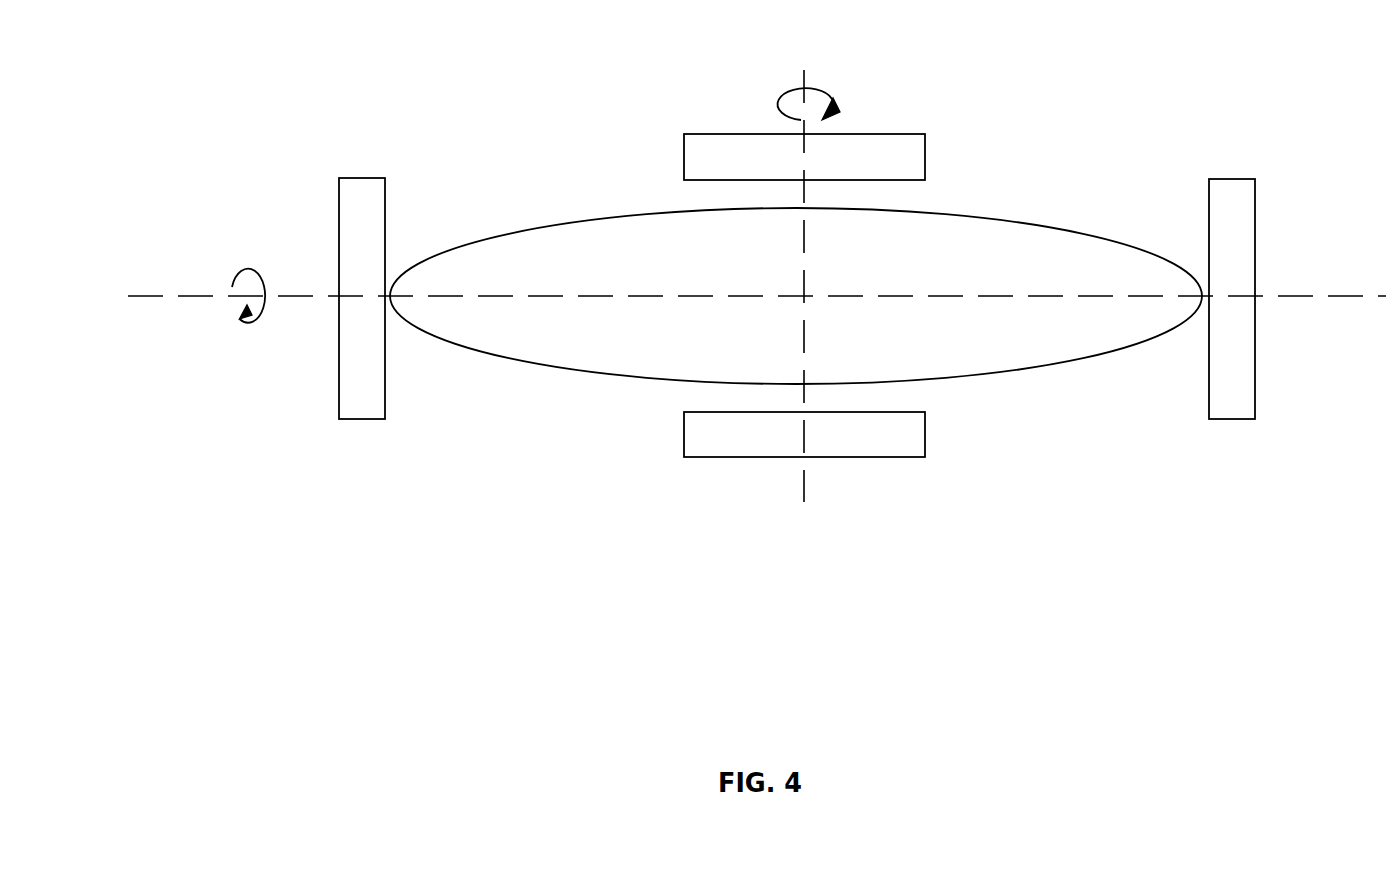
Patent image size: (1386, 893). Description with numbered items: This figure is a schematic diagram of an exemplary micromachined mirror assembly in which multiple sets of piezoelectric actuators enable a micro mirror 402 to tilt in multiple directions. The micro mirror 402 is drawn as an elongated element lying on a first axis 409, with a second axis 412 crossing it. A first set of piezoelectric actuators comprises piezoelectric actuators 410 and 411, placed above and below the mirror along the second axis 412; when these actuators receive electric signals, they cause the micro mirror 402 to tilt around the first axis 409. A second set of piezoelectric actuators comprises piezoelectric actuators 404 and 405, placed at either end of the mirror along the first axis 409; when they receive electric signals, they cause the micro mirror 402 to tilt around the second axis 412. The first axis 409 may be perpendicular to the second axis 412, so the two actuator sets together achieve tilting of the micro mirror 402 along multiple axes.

The micro mirror 402 is at (554, 221).
The piezoelectric actuator 404 is at (335, 197).
The piezoelectric actuator 405 is at (1200, 181).
The first axis 409 is at (186, 291).
The piezoelectric actuator 410 is at (675, 153).
The piezoelectric actuator 411 is at (675, 447).
The second axis 412 is at (795, 69).